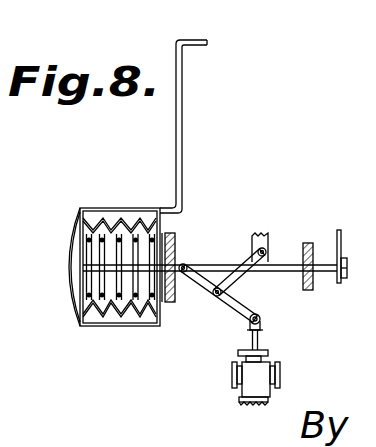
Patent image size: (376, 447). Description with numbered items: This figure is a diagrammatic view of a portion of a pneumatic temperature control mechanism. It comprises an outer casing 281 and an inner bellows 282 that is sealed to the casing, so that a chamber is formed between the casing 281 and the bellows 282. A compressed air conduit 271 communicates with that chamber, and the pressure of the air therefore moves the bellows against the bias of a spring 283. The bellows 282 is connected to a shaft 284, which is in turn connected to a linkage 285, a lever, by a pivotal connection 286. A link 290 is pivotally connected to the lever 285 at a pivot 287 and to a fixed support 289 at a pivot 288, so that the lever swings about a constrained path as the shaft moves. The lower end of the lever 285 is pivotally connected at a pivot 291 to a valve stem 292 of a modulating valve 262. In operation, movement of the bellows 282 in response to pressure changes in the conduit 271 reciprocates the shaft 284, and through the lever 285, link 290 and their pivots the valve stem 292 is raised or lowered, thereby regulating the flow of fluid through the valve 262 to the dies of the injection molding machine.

The modulating valve 262 is at (264, 368).
The compressed air conduit 271 is at (178, 40).
The outer casing 281 is at (113, 185).
The inner bellows 282 is at (97, 313).
The spring 283 is at (166, 234).
The shaft 284 is at (291, 275).
The linkage 285 is at (200, 287).
The pivotal connection 286 is at (186, 266).
The pivotal connection of link to lever 287 is at (219, 296).
The pivotal connection of link to fixed support 288 is at (266, 248).
The fixed support 289 is at (252, 240).
The link 290 is at (239, 274).
The pivotal connection to valve stem 291 is at (261, 322).
The valve stem 292 is at (250, 340).